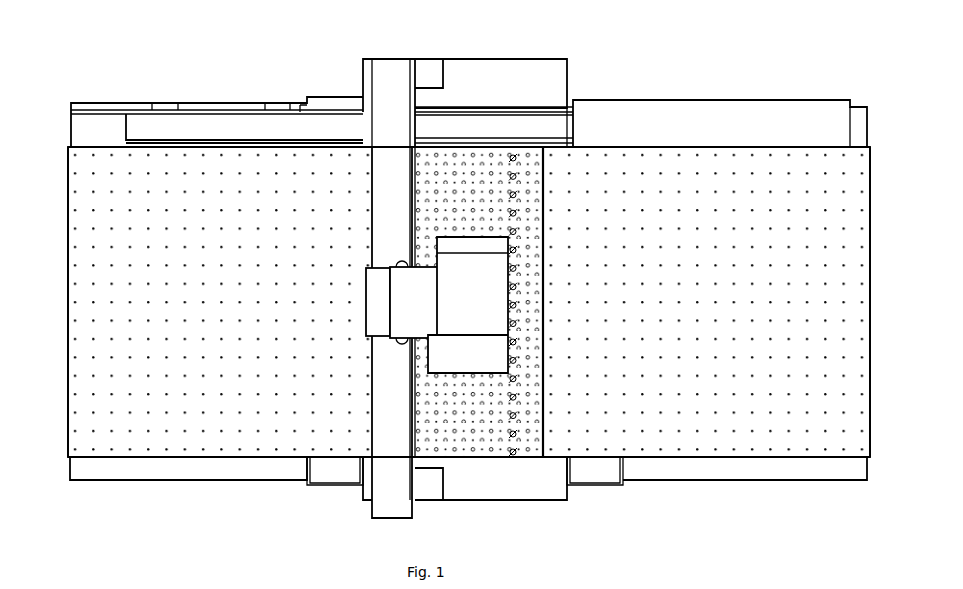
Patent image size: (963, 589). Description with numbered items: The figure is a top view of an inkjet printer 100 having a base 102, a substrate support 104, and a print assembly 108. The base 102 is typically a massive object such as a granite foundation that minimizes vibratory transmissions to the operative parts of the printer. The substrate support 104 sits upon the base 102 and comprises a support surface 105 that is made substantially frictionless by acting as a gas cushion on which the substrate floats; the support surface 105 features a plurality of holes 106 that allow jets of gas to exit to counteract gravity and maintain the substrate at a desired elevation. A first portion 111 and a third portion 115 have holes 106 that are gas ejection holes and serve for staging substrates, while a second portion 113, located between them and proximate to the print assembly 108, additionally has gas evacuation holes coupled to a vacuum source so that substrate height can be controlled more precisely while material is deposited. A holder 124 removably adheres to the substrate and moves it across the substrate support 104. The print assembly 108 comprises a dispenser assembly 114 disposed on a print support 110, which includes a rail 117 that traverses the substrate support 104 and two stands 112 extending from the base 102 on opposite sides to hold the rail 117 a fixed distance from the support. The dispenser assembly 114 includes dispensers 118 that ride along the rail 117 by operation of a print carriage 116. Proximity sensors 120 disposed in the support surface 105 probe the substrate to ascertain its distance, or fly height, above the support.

The inkjet printer 100 is at (118, 92).
The base 102 is at (90, 482).
The substrate support 104 is at (870, 388).
The support surface 105 is at (852, 292).
The holes 106 is at (540, 152).
The print assembly 108 is at (352, 200).
The print support 110 is at (374, 242).
The first portion 111 is at (890, 205).
The stands 112 is at (428, 58).
The second portion 113 is at (490, 460).
The dispenser assembly 114 is at (358, 328).
The third portion 115 is at (58, 255).
The print carriage 116 is at (365, 290).
The rail 117 is at (388, 137).
The dispensers 118 is at (510, 315).
The proximity sensors 120 is at (520, 212).
The holder 124 is at (752, 102).